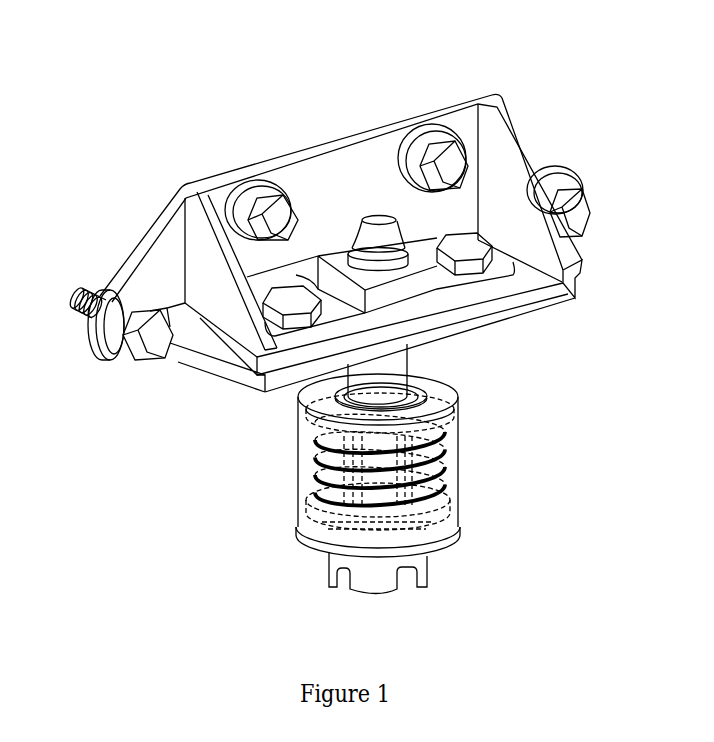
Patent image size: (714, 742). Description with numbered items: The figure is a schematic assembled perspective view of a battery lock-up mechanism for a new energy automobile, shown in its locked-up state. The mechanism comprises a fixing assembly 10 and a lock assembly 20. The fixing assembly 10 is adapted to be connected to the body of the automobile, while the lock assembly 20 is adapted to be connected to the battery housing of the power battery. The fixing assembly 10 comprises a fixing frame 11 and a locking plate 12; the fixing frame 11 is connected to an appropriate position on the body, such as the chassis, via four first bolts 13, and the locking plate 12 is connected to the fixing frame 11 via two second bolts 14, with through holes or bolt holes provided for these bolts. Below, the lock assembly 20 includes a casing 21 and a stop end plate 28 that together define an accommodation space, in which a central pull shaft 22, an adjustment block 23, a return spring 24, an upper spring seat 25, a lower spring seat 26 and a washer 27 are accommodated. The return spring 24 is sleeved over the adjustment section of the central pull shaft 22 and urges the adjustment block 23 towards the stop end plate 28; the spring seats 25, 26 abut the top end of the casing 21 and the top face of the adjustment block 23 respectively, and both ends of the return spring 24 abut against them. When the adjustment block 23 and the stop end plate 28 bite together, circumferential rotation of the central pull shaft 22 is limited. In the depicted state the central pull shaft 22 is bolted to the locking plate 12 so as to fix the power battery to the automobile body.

The fixing assembly 10 is at (493, 158).
The fixing frame 11 is at (347, 186).
The locking plate 12 is at (425, 298).
The first bolts 13 is at (157, 333).
The second bolts 14 is at (470, 247).
The lock assembly 20 is at (285, 466).
The casing 21 is at (453, 492).
The central pull shaft 22 is at (388, 370).
The adjustment block 23 is at (433, 573).
The return spring 24 is at (433, 473).
The upper spring seat 25 is at (445, 437).
The lower spring seat 26 is at (437, 517).
The washer 27 is at (440, 408).
The stop end plate 28 is at (317, 542).